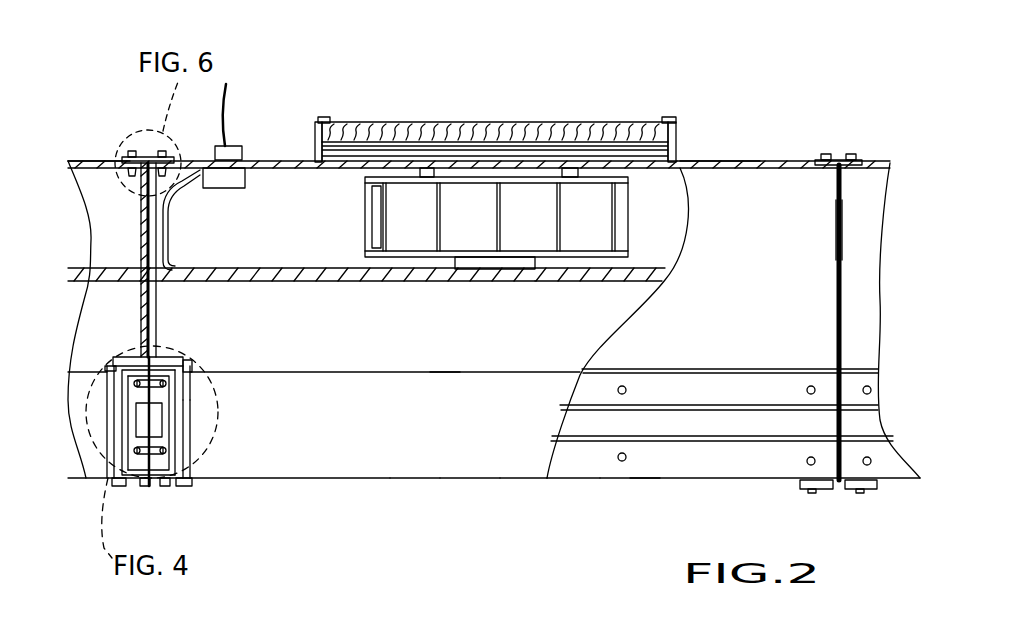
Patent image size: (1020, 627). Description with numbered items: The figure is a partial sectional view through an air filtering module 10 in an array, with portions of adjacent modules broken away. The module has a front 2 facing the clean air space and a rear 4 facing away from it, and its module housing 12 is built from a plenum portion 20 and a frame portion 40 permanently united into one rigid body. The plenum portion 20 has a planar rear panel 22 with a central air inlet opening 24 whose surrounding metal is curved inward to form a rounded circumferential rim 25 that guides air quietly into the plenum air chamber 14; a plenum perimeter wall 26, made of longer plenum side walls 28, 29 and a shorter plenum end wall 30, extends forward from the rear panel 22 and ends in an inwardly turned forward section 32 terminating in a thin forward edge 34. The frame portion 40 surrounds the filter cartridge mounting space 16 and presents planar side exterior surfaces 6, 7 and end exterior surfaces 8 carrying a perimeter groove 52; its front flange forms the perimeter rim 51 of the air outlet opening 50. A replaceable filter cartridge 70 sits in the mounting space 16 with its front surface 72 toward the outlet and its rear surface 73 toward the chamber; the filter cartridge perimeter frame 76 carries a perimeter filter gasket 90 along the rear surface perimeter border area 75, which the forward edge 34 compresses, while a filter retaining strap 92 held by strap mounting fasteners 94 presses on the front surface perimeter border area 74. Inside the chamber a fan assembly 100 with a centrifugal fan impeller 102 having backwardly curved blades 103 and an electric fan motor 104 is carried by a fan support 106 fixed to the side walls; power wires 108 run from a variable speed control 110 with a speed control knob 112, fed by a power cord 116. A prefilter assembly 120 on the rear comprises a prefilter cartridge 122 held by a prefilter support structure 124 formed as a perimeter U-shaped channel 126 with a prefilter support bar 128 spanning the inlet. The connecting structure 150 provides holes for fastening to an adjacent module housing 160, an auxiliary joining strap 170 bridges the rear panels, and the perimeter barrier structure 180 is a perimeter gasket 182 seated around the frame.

The front 2 is at (518, 490).
The rear 4 is at (738, 158).
The side exterior surface 6 is at (107, 481).
The side exterior surface 7 is at (830, 472).
The end exterior surface 8 is at (637, 470).
The air filtering module 10 is at (690, 157).
The module housing 12 is at (594, 347).
The plenum air chamber 14 is at (350, 336).
The filter cartridge mounting space 16 is at (423, 369).
The plenum portion 20 is at (817, 289).
The rear panel 22 is at (777, 162).
The air inlet opening 24 is at (470, 172).
The rounded circumferential rim 25 is at (563, 167).
The plenum perimeter wall 26 is at (752, 241).
The plenum side wall 28 is at (150, 238).
The plenum side wall 29 is at (832, 192).
The plenum end wall 30 is at (818, 224).
The forward section 32 is at (166, 358).
The forward edge 34 is at (188, 362).
The frame portion 40 is at (667, 390).
The air outlet opening 50 is at (395, 480).
The perimeter rim 51 is at (152, 479).
The perimeter groove 52 is at (737, 442).
The filter cartridge 70 is at (368, 442).
The front surface 72 is at (443, 376).
The rear surface 73 is at (464, 477).
The front surface perimeter border area 74 is at (184, 462).
The rear surface perimeter border area 75 is at (186, 374).
The filter cartridge perimeter frame 76 is at (186, 410).
The perimeter filter gasket 90 is at (191, 371).
The filter retaining strap 92 is at (175, 485).
The strap mounting fastener 94 is at (161, 485).
The fan assembly 100 is at (634, 243).
The centrifugal fan impeller 102 is at (365, 192).
The backwardly curved blades 103 is at (378, 233).
The electric fan motor 104 is at (490, 262).
The fan support 106 is at (558, 283).
The power wires 108 is at (233, 270).
The variable speed control 110 is at (220, 190).
The speed control knob 112 is at (216, 151).
The power cord 116 is at (227, 102).
The prefilter assembly 120 is at (651, 116).
The prefilter cartridge 122 is at (397, 128).
The prefilter support structure 124 is at (318, 150).
The perimeter U-shaped channel 126 is at (340, 136).
The prefilter support bar 128 is at (610, 148).
The perimeter wall connecting structure 150 is at (812, 378).
The module housing 160 is at (97, 161).
The auxiliary joining strap 170 is at (138, 152).
The perimeter barrier structure 180 is at (608, 447).
The perimeter gasket 182 is at (655, 423).